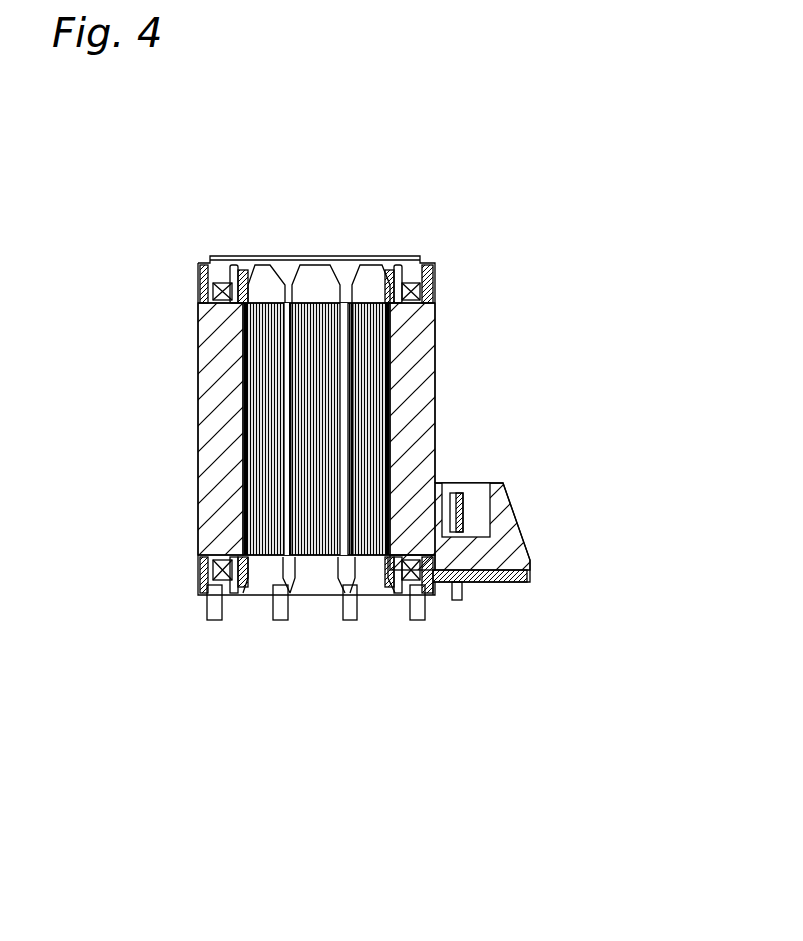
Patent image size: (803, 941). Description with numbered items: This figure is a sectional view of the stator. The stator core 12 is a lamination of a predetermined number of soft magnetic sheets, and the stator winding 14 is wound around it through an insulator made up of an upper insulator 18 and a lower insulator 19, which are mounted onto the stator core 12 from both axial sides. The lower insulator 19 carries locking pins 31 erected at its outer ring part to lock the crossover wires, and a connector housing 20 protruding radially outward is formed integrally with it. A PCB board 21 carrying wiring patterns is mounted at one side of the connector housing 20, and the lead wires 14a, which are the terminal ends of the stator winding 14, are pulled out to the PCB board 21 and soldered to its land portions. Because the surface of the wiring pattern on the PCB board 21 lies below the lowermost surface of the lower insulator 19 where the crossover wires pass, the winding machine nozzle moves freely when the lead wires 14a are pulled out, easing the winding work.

The stator core 12 is at (215, 425).
The stator winding 14 is at (207, 292).
The lead wires 14a is at (436, 596).
The upper insulator 18 is at (435, 275).
The lower insulator 19 is at (207, 577).
The connector housing 20 is at (500, 530).
The PCB board 21 is at (490, 585).
The locking pins 31 is at (213, 620).